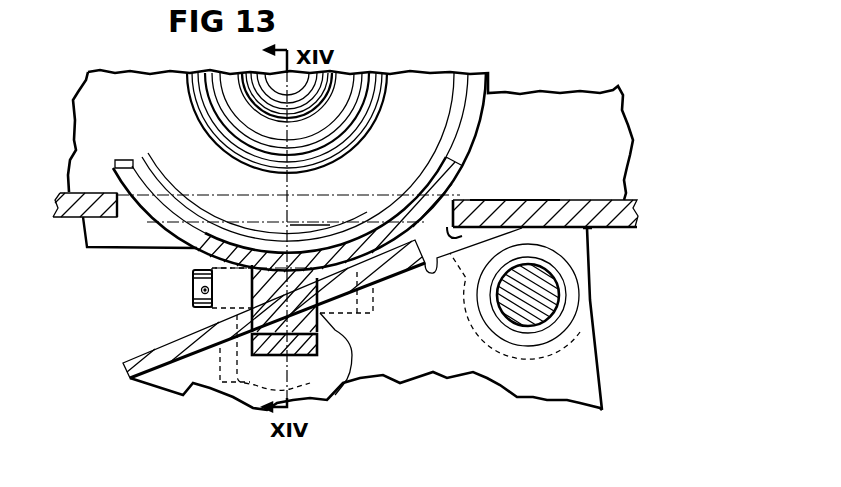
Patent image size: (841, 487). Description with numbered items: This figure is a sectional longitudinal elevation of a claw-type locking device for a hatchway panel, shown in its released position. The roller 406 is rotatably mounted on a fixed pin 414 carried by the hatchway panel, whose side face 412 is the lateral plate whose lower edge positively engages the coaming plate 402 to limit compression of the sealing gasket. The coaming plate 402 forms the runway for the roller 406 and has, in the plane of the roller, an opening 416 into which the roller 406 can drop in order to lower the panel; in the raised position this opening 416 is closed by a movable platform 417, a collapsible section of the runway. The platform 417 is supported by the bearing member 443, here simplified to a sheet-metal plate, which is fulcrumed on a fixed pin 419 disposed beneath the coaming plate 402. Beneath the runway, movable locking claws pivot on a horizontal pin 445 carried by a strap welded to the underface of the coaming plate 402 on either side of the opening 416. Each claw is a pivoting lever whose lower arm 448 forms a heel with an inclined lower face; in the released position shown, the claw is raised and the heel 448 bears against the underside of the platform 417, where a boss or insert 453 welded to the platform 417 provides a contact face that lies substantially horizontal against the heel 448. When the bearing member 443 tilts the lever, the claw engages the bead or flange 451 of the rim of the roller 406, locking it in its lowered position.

The coaming plate 402 is at (630, 200).
The roller 406 is at (450, 130).
The side face of the hatchway panel 412 is at (608, 118).
The fixed pin 414 is at (303, 95).
The opening 416 is at (507, 200).
The movable platform 417 is at (393, 263).
The fixed pin 419 is at (540, 292).
The bearing member 443 is at (583, 382).
The horizontal pin 445 is at (192, 297).
The lower arm 448 is at (305, 355).
The bead or flange 451 is at (313, 223).
The boss or insert 453 is at (317, 332).